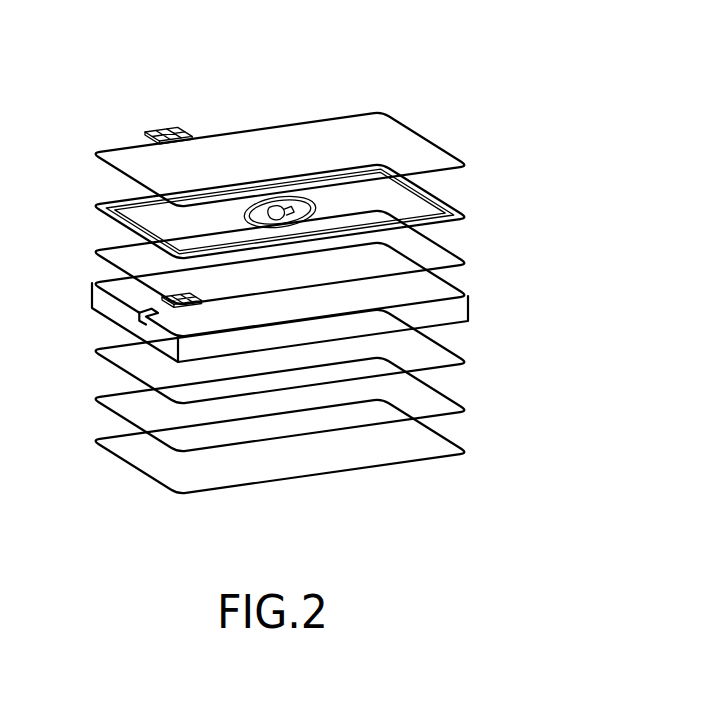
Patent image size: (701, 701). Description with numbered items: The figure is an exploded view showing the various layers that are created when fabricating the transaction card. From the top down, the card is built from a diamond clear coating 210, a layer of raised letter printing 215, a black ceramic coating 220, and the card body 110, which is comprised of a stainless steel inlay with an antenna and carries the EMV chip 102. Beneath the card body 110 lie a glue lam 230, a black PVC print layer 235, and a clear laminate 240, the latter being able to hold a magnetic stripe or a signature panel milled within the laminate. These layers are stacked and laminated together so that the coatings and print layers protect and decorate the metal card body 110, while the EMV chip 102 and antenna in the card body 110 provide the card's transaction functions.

The EMV chip 102 is at (184, 128).
The card body 110 is at (500, 318).
The diamond clear coating 210 is at (500, 167).
The raised letter printing 215 is at (500, 218).
The black ceramic coating 220 is at (500, 265).
The glue lam 230 is at (506, 365).
The black PVC print layer 235 is at (506, 410).
The clear laminate 240 is at (506, 455).